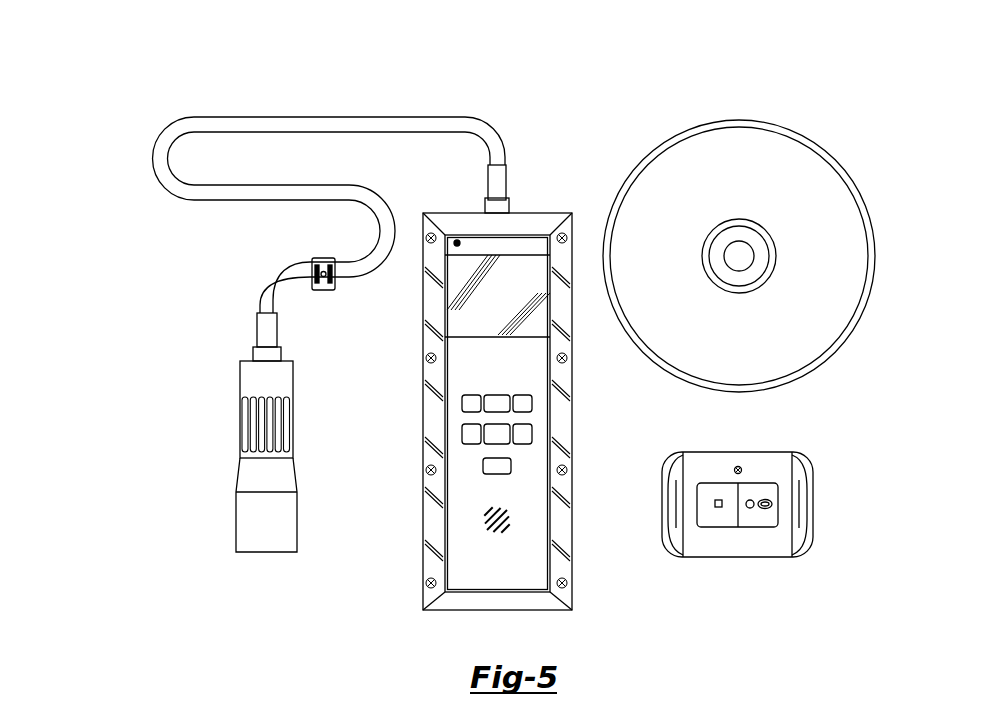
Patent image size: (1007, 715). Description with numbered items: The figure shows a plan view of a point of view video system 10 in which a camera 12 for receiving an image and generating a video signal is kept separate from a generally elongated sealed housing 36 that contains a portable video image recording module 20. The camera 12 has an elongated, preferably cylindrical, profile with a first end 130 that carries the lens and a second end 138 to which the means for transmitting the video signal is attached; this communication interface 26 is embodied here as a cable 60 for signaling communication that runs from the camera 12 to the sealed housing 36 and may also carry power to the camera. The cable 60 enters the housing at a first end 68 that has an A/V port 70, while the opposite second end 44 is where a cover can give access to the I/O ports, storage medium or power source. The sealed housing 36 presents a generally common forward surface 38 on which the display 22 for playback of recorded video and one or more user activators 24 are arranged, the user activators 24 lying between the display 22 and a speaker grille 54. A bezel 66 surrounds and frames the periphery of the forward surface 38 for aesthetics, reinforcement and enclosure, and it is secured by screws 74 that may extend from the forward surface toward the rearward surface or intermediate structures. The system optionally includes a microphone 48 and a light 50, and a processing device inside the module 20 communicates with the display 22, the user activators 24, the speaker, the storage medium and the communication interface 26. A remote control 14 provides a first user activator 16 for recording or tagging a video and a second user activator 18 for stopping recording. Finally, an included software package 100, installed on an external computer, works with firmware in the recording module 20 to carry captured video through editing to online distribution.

The point of view (POV) video system 10 is at (123, 365).
The camera 12 is at (185, 477).
The remote control 14 is at (830, 510).
The first user activator 16 is at (763, 518).
The second user activator 18 is at (707, 516).
The portable video image recording module 20 is at (565, 155).
The display 22 is at (497, 317).
The user activators 24 is at (483, 465).
The communication interface 26 is at (405, 97).
The sealed housing 36 is at (422, 558).
The forward surface 38 is at (489, 542).
The second end of the sealed housing 44 is at (407, 607).
The microphone 48 is at (323, 291).
The light 50 is at (456, 240).
The speaker grille 54 is at (513, 517).
The cable 60 is at (326, 117).
The bezel 66 is at (430, 518).
The first end of the sealed housing 68 is at (575, 200).
The A/V port 70 is at (512, 208).
The screws 74 is at (425, 350).
The software package 100 is at (830, 258).
The first end of the camera 130 is at (227, 555).
The second end of the camera 138 is at (236, 355).